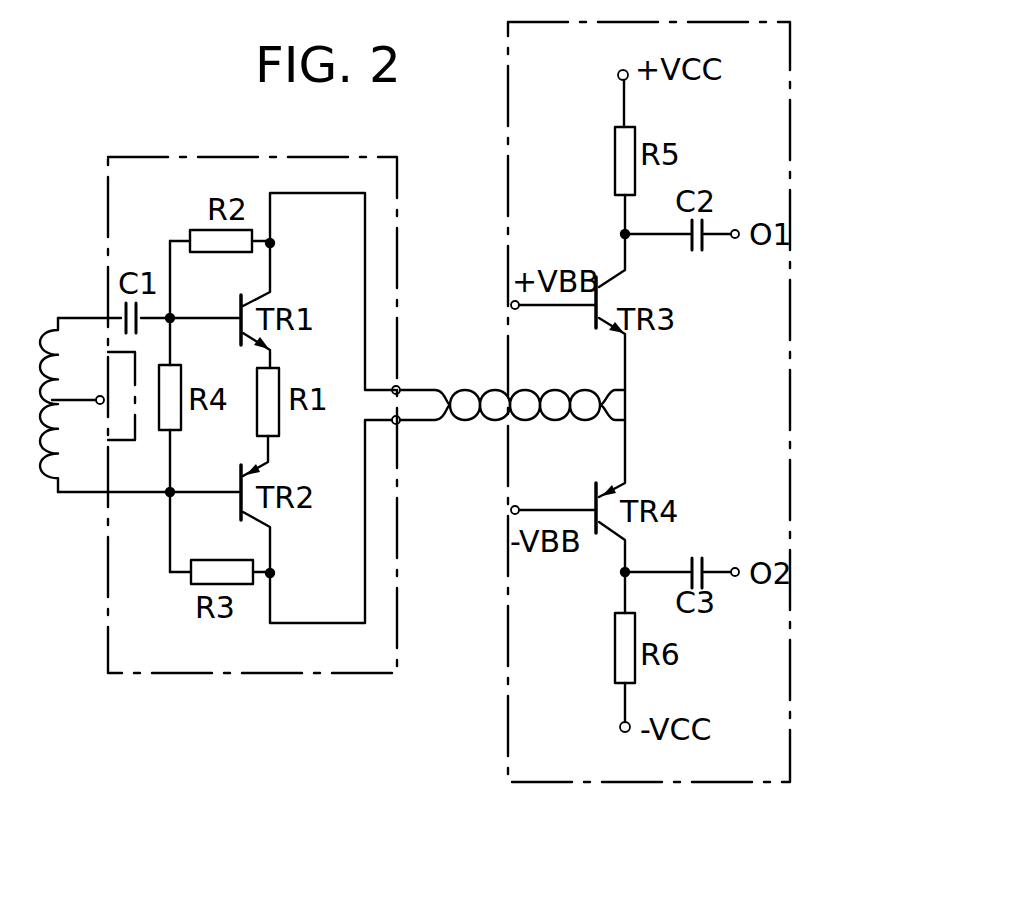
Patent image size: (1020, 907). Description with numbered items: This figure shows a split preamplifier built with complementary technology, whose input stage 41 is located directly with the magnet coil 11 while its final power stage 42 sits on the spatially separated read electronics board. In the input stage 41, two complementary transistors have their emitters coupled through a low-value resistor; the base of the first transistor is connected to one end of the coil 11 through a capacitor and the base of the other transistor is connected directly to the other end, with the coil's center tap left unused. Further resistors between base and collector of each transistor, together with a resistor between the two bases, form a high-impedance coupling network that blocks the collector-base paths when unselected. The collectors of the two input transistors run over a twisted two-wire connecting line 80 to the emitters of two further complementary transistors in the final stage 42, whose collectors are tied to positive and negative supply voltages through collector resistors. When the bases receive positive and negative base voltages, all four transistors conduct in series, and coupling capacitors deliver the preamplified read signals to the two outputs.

The coil / pickup antenna 11 is at (100, 395).
The input stage 41 is at (246, 675).
The final power stage 42 is at (508, 734).
The twisted pair connecting line 80 is at (492, 421).